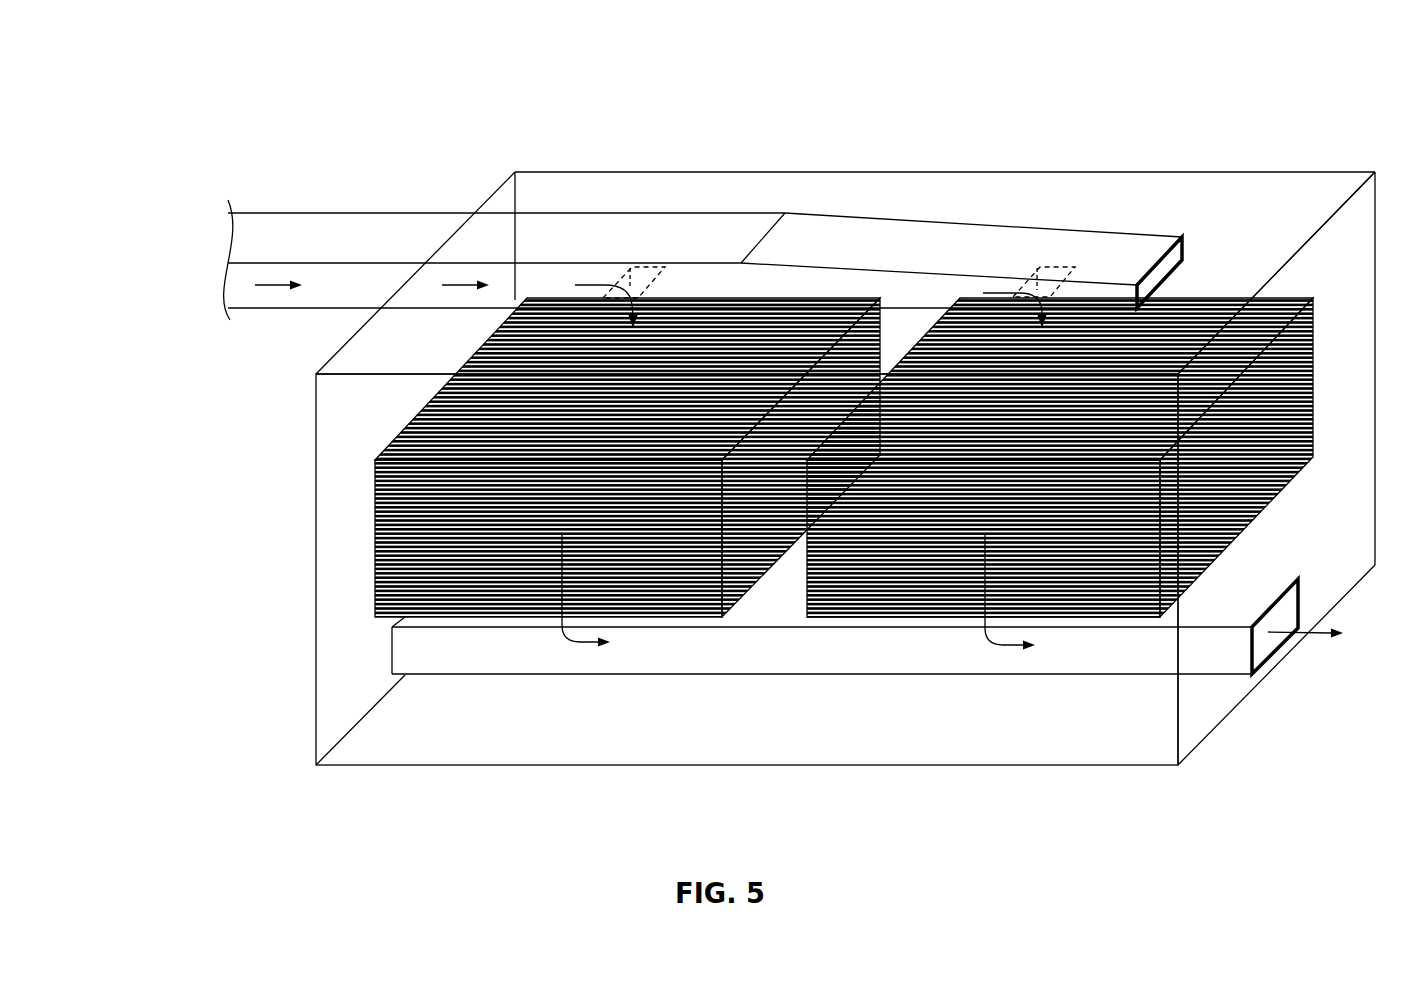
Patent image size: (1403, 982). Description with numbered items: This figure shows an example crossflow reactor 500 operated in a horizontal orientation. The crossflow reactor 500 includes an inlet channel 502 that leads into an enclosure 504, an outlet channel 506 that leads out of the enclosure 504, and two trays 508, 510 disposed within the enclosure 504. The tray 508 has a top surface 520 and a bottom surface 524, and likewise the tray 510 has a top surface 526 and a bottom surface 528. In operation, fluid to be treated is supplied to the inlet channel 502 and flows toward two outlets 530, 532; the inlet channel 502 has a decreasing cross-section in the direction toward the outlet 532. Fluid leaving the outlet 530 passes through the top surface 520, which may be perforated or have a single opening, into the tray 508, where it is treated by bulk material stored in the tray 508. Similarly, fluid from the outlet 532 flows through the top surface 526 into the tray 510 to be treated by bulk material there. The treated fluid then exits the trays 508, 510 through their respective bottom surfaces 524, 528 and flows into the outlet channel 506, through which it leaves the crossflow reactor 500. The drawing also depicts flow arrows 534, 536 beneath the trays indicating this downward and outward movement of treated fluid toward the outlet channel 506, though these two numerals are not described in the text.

The crossflow reactor 500 is at (210, 92).
The inlet channel 502 is at (282, 199).
The enclosure 504 is at (846, 171).
The outlet channel 506 is at (1209, 658).
The tray 508 is at (372, 453).
The tray 510 is at (1231, 285).
The top surface 520 is at (455, 398).
The bottom surface 524 is at (447, 620).
The top surface 526 is at (1140, 290).
The bottom surface 528 is at (1060, 620).
The outlet 530 is at (603, 294).
The outlet 532 is at (998, 293).
The first outlet air flow 534 is at (583, 645).
The second outlet air flow 536 is at (1006, 648).